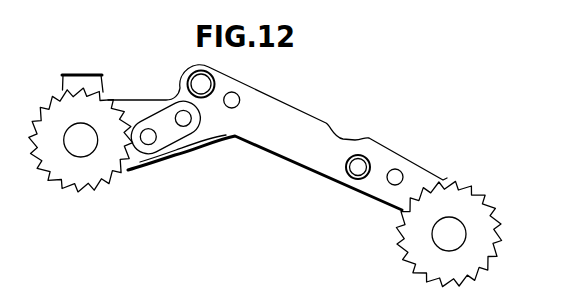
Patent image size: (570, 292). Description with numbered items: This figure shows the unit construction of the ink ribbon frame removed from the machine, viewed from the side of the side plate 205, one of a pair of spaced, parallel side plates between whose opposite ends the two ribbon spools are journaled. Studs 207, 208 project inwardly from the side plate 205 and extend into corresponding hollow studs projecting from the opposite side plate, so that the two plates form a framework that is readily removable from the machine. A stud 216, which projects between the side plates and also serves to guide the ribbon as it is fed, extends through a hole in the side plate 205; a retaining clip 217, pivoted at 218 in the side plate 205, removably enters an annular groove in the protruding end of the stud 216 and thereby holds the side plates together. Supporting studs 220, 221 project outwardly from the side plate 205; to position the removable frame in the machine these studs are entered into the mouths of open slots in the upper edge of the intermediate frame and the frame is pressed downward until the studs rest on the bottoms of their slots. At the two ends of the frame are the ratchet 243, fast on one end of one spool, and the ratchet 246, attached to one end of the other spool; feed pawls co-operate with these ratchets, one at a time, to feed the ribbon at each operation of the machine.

The side plate 205 is at (317, 122).
The stud 207 is at (238, 97).
The stud 208 is at (397, 170).
The stud 216 is at (146, 141).
The retaining clip 217 is at (160, 117).
The pivot 218 is at (188, 124).
The supporting stud 220 is at (203, 80).
The supporting stud 221 is at (356, 171).
The ratchet 243 is at (53, 160).
The ratchet 246 is at (497, 253).